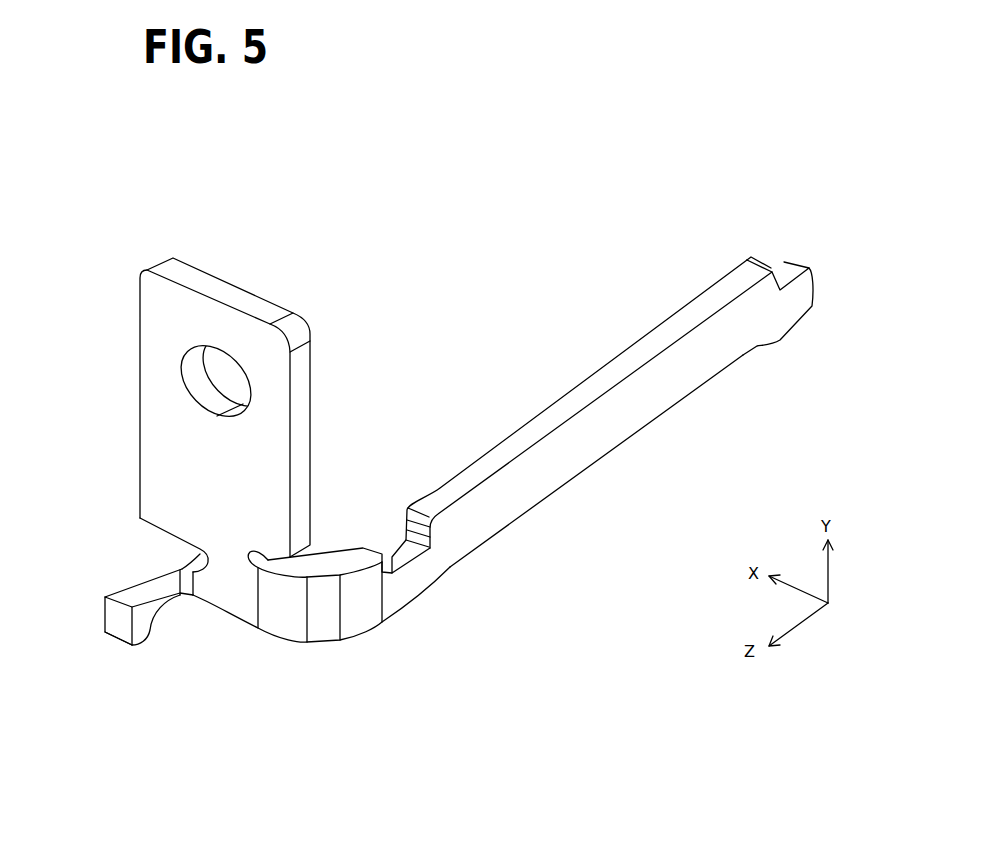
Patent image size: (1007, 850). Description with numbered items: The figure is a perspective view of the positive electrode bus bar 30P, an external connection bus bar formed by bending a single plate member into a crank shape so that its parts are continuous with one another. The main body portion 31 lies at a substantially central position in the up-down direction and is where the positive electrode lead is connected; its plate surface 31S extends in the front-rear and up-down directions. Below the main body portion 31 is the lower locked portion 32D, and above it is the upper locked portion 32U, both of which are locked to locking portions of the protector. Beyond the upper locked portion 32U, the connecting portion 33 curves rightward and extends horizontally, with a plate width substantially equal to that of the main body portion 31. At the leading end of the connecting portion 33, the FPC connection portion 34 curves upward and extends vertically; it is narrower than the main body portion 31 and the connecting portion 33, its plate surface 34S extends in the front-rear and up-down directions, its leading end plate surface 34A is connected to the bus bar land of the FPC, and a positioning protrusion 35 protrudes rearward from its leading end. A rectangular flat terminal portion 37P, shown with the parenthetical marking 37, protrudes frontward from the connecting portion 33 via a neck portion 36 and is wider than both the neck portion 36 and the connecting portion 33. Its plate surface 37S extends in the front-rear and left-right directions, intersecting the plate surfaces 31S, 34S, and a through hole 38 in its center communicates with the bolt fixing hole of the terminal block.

The positive electrode bus bar 30P is at (492, 168).
The main body portion 31 is at (567, 405).
The plate surface of the main body portion 31S is at (585, 458).
The lower locked portion 32D is at (780, 265).
The upper locked portion 32U is at (396, 550).
The connecting portion 33 is at (240, 595).
The FPC connection portion 34 is at (130, 577).
The leading end plate surface 34A is at (138, 605).
The plate surface of the FPC connection portion 34S is at (158, 597).
The positioning protrusion 35 is at (143, 637).
The neck portion 36 is at (220, 554).
The terminal portion 37P is at (138, 295).
The plate 37 is at (178, 407).
The plate surface of the terminal portion 37S is at (182, 435).
The through hole 38 is at (193, 370).